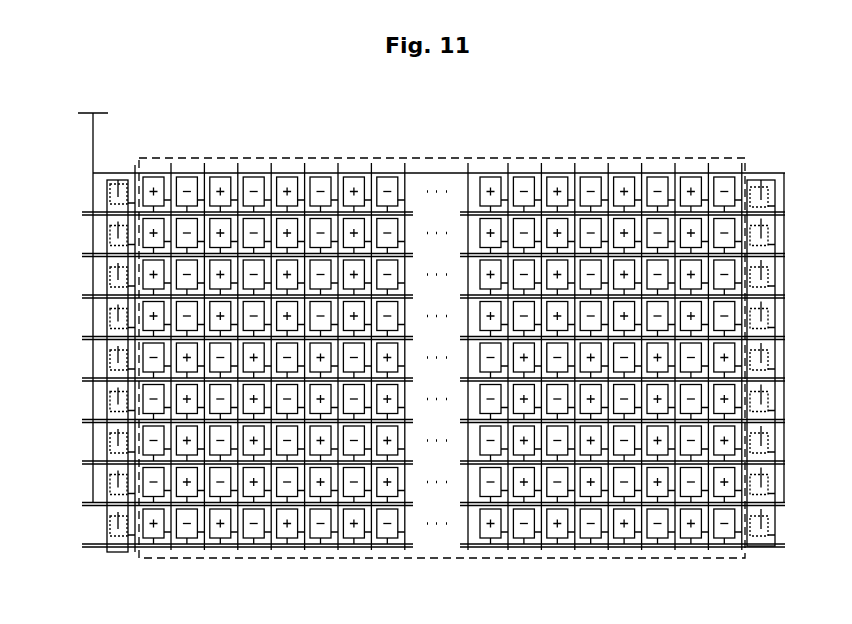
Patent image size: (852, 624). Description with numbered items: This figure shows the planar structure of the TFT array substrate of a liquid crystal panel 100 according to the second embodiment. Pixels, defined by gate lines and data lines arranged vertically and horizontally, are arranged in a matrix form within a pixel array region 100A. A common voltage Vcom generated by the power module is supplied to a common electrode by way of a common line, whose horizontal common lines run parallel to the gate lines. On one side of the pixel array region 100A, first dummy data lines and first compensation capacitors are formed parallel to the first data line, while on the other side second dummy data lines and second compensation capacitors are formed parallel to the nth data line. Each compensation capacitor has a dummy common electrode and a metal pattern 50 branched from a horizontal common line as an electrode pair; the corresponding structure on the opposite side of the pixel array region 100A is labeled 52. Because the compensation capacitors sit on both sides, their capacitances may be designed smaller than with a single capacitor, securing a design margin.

The liquid crystal panel 100 is at (616, 97).
The pixel array region 100A is at (442, 158).
The metal pattern 50 is at (118, 553).
The second dummy driving unit 52 is at (758, 546).
The common voltage Vcom is at (95, 300).